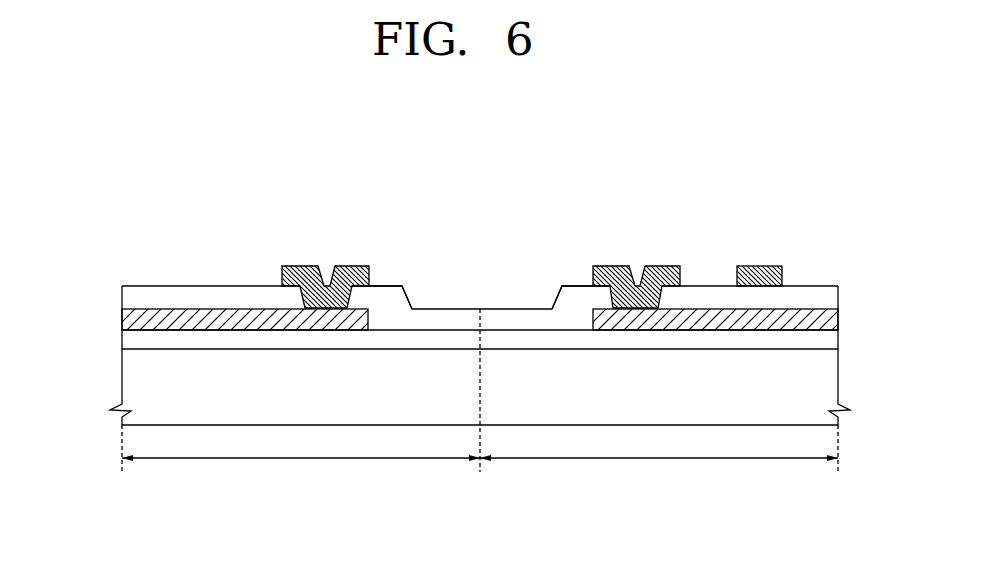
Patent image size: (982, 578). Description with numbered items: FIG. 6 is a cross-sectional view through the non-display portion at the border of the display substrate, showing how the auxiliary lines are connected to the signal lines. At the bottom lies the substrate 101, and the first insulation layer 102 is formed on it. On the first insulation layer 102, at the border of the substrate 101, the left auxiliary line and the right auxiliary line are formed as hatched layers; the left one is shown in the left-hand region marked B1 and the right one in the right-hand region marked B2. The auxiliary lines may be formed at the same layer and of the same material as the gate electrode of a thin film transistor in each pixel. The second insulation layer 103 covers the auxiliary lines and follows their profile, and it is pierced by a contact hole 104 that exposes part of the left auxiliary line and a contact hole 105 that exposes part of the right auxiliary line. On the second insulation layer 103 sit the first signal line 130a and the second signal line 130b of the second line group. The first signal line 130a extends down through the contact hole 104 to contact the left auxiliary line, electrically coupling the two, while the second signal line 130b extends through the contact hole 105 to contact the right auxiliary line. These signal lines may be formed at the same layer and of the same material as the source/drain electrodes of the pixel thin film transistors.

The substrate 101 is at (132, 381).
The first insulation layer 102 is at (132, 339).
The second insulation layer 103 is at (132, 297).
The contact hole 104 is at (360, 298).
The contact hole 105 is at (598, 298).
The first signal line 130a is at (297, 266).
The second signal line 130b is at (663, 266).
The first region width B1 is at (301, 470).
The second region width B2 is at (659, 470).